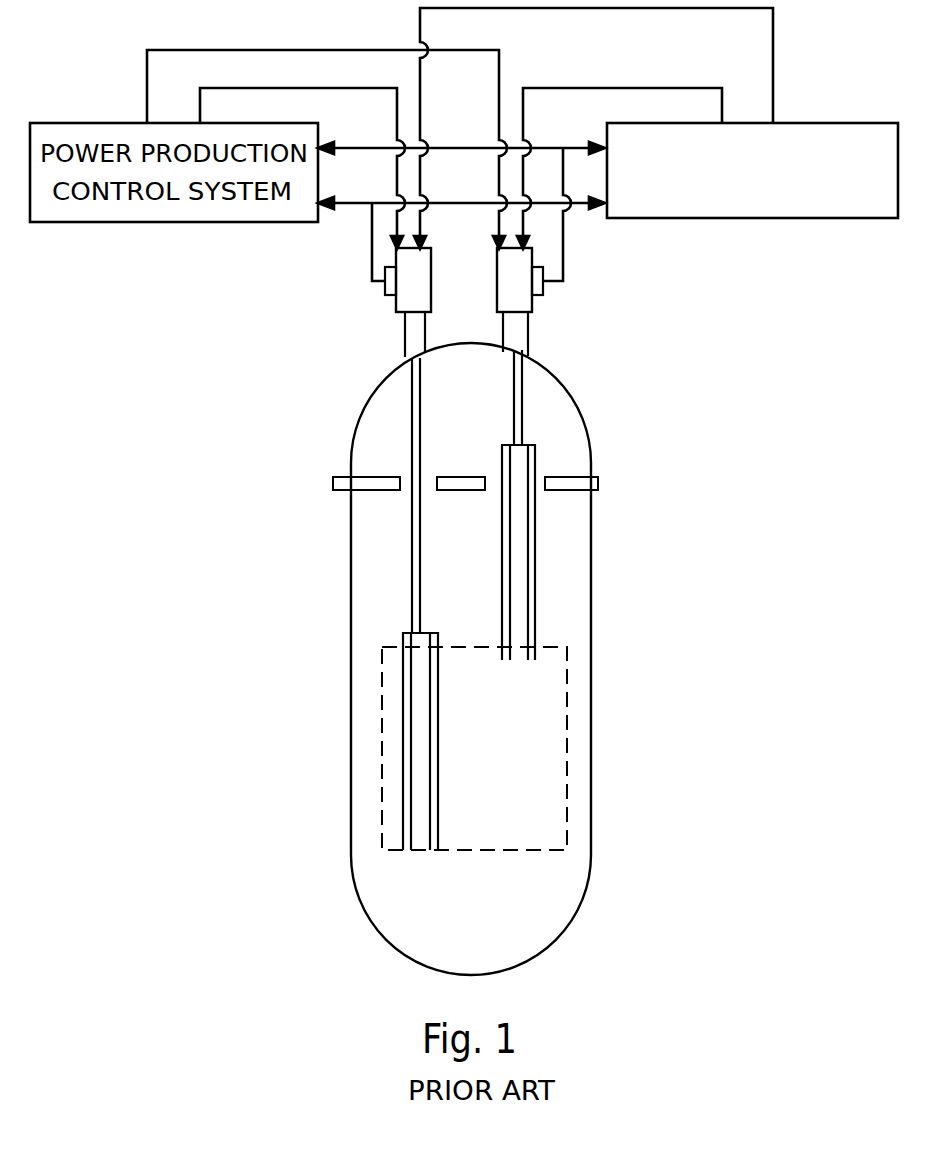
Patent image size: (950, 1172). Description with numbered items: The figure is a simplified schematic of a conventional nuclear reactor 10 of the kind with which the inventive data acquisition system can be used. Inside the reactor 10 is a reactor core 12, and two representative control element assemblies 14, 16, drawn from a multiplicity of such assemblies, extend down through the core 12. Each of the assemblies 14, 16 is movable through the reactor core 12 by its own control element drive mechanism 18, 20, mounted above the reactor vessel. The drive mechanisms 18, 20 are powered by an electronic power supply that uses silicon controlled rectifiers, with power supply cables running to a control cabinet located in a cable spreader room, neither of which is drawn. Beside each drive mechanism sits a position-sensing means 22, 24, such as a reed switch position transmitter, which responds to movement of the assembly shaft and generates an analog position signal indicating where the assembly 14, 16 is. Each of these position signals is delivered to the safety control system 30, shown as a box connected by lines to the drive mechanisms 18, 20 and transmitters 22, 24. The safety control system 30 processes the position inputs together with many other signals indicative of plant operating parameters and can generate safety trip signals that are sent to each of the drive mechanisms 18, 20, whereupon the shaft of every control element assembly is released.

The nuclear reactor 10 is at (591, 592).
The reactor core 12 is at (540, 703).
The control element assembly 14 is at (412, 588).
The control element assembly 16 is at (525, 412).
The control element drive mechanism 18 is at (396, 305).
The control element drive mechanism 20 is at (532, 305).
The position transmitter means 22 is at (385, 290).
The position transmitter means 24 is at (543, 290).
The safety control system 30 is at (793, 218).